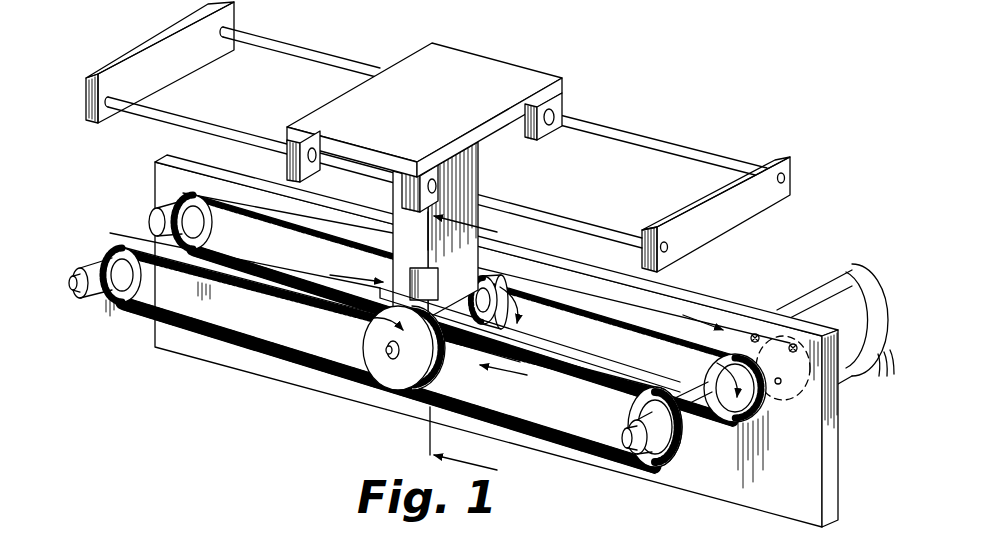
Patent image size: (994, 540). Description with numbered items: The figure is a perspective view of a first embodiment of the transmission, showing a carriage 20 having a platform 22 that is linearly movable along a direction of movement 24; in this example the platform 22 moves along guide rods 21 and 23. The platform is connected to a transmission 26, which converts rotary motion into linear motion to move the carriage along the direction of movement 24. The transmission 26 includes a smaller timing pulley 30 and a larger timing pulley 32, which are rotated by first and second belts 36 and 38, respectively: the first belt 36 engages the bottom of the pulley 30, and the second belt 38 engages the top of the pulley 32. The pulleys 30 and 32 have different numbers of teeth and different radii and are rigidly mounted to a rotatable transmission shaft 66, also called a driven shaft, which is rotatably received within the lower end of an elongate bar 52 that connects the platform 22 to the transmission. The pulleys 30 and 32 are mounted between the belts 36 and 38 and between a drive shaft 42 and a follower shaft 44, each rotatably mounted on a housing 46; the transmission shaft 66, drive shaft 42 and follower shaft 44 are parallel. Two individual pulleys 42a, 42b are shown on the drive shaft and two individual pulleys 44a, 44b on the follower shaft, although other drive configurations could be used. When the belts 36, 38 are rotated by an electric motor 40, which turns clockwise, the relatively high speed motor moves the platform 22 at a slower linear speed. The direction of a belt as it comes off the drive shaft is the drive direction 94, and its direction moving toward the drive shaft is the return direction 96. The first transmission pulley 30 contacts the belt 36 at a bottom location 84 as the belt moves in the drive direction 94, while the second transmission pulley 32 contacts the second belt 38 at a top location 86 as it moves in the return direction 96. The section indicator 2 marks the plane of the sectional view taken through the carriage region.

The carriage 20 is at (512, 56).
The guide rod 21 is at (690, 151).
The platform 22 is at (544, 81).
The guide rod 23 is at (603, 200).
The direction of movement 24 is at (414, 100).
The transmission 26 is at (350, 403).
The smaller timing pulley 30 is at (503, 290).
The larger timing pulley 32 is at (403, 381).
The first belt 36 is at (658, 325).
The second belt 38 is at (593, 360).
The electric motor 40 is at (828, 280).
The drive shaft 42 is at (718, 417).
The pulley 42a is at (660, 462).
The pulley 42b is at (732, 407).
The follower shaft 44 is at (163, 233).
The pulley 44a is at (78, 250).
The pulley 44b is at (152, 215).
The housing 46 is at (820, 442).
The elongate bar 52 is at (403, 218).
The transmission shaft 66 is at (350, 380).
The bottom location 84 is at (472, 357).
The top location 86 is at (363, 323).
The drive direction 94 is at (597, 452).
The return direction 96 is at (700, 307).
The section line 2- 2 is at (472, 350).